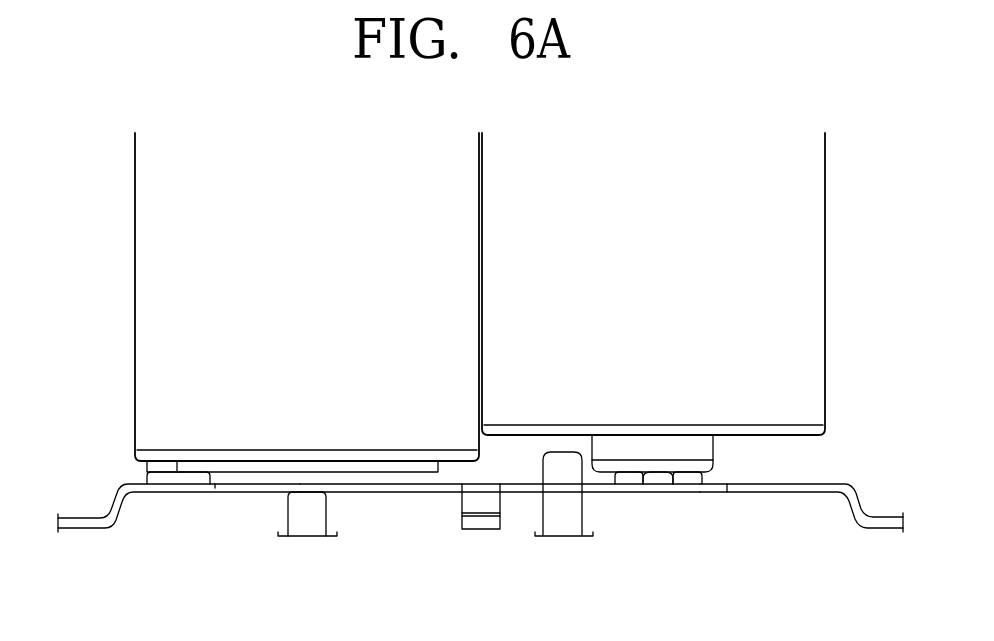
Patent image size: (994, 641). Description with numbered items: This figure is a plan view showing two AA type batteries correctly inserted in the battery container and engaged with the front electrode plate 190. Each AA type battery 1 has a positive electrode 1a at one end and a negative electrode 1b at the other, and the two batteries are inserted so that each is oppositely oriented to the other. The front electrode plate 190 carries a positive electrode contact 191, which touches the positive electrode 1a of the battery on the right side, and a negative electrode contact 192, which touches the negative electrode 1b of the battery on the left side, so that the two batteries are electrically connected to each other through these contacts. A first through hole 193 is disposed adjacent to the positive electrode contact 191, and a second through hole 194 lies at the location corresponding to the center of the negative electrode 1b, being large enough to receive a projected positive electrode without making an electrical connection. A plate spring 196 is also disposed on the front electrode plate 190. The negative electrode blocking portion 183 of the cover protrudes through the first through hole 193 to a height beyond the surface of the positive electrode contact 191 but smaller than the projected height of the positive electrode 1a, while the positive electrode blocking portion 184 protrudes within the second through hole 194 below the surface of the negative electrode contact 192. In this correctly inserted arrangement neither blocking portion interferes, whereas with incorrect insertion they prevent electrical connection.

The AA type battery 1 is at (145, 293).
The positive electrode 1a is at (670, 447).
The negative electrode 1b is at (255, 468).
The negative electrode blocking portion 183 is at (562, 522).
The positive electrode blocking portion 184 is at (305, 520).
The front electrode plate 190 is at (78, 530).
The positive electrode contact 191 is at (657, 478).
The negative electrode contact 192 is at (178, 463).
The first through hole 193 is at (713, 485).
The second through hole 194 is at (375, 487).
The plate spring 196 is at (480, 522).